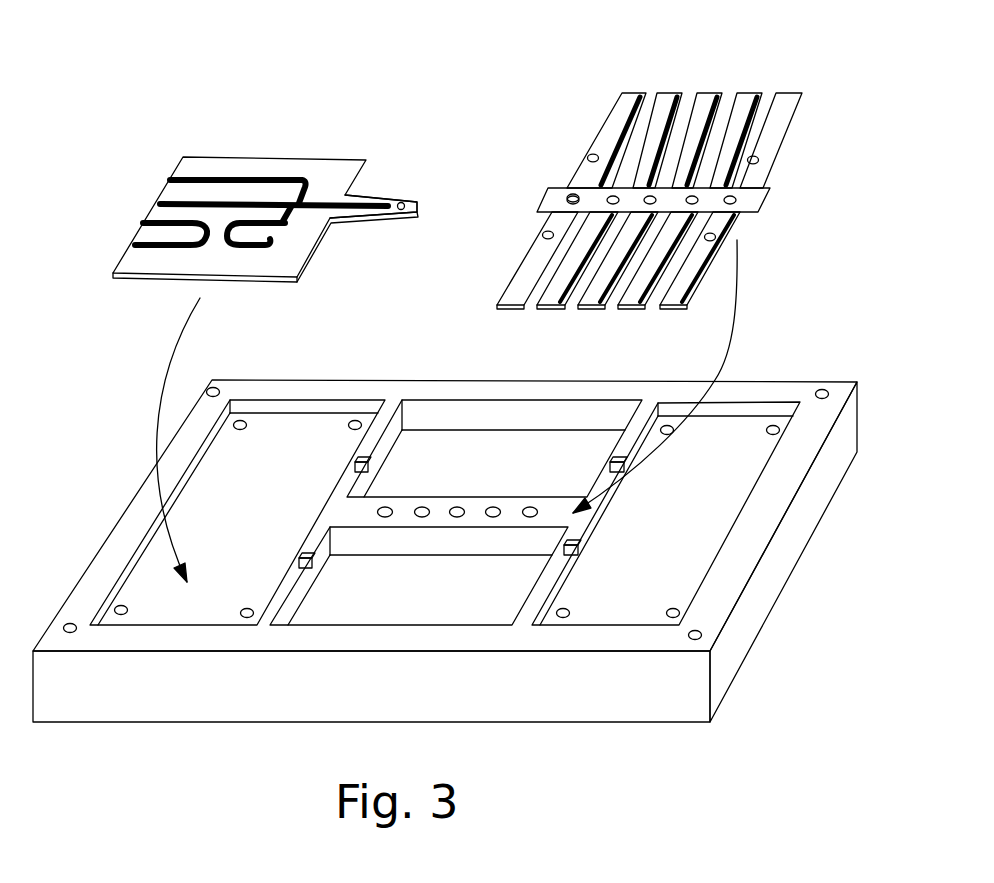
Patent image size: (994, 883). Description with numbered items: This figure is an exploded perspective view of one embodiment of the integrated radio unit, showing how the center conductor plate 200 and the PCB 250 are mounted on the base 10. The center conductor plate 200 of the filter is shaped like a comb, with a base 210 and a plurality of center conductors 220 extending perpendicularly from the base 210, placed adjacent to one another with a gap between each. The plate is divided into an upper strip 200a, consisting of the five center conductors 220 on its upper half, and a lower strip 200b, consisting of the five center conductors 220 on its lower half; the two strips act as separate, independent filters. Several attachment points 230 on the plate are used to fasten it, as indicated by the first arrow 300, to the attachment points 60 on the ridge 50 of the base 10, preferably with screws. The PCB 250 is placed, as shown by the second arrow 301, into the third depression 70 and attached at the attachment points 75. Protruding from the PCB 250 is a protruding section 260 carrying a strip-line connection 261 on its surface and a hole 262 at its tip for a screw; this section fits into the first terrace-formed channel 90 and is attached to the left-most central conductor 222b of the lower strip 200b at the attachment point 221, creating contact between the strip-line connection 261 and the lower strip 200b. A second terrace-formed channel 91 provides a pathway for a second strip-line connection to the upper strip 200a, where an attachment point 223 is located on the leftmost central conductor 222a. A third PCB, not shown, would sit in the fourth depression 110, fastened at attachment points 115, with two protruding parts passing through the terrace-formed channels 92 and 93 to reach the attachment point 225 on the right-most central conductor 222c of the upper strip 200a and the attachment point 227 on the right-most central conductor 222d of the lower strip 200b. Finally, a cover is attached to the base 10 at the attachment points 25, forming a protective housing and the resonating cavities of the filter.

The base 10 is at (841, 353).
The attachment points 25 is at (213, 386).
The ridge 50 is at (447, 551).
The attachment points 60 is at (493, 507).
The third depression 70 is at (288, 445).
The attachment points 75 is at (128, 610).
The first terrace-formed channel 90 is at (313, 563).
The second terrace-formed channel 91 is at (370, 468).
The terrace-formed channel 92 is at (580, 549).
The terrace-formed channel 93 is at (608, 466).
The fourth depression 110 is at (706, 553).
The attachment points 115 is at (569, 612).
The center conductor plate 200 is at (646, 40).
The upper strip 200a is at (797, 110).
The lower strip 200b is at (693, 275).
The base 210 is at (758, 204).
The center conductors 220 is at (700, 95).
The attachment point 221 is at (541, 237).
The leftmost central conductor 222a is at (628, 98).
The left-most central conductor 222b is at (510, 300).
The right-most central conductor 222c is at (795, 93).
The right-most central conductor 222d is at (676, 298).
The attachment point 223 is at (588, 158).
The attachment point 225 is at (760, 160).
The attachment point 227 is at (720, 233).
The attachment points 230 is at (566, 198).
The PCB 250 is at (307, 110).
The protruding section 260 is at (370, 196).
The strip-line connection 261 is at (360, 214).
The hole 262 is at (404, 210).
The first arrow 300 is at (742, 303).
The second arrow 301 is at (171, 358).